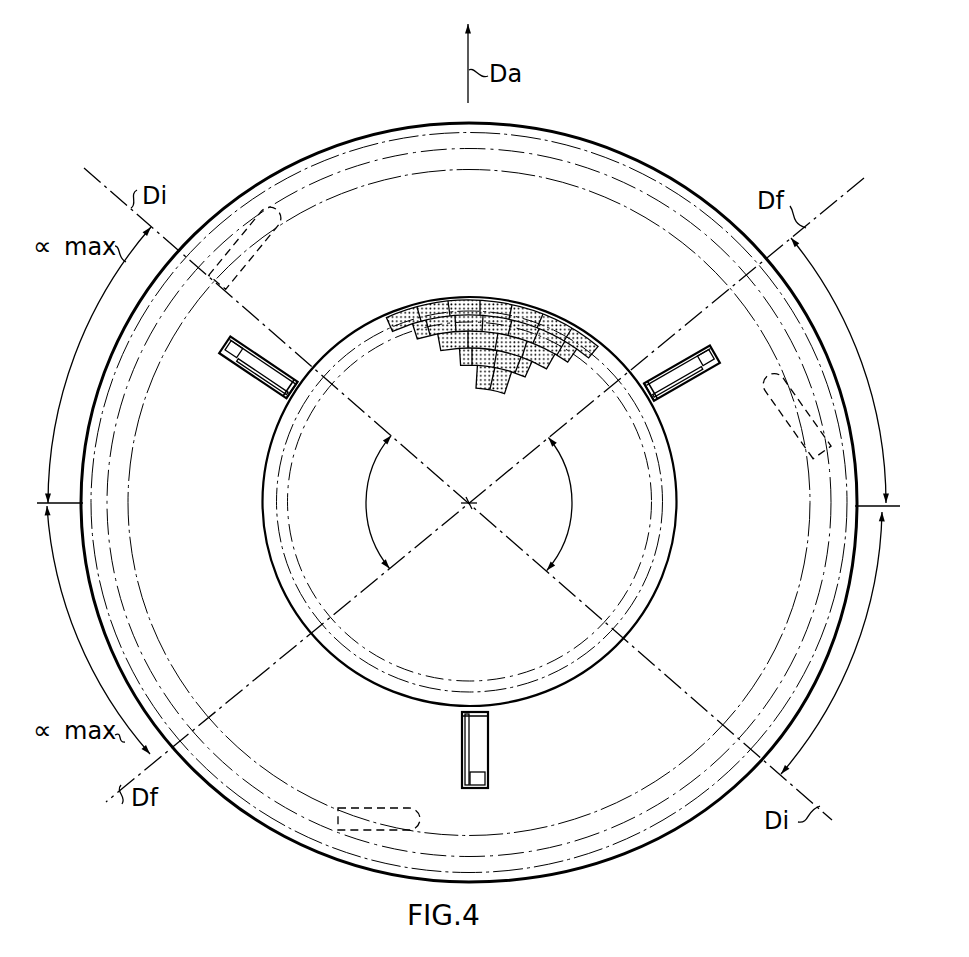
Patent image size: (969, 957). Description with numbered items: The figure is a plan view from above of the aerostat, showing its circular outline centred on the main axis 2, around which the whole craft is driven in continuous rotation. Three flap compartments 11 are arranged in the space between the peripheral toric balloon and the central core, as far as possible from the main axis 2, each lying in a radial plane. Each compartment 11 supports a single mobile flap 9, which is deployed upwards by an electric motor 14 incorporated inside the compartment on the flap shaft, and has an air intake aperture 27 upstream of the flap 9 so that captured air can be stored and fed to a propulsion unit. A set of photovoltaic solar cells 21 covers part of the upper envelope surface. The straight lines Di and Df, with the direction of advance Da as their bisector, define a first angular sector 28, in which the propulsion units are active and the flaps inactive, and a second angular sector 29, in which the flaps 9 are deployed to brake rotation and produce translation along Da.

The main axis 2 is at (469, 500).
The mobile flap 9 is at (265, 362).
The compartment 11 is at (257, 386).
The electric motor 14 is at (223, 352).
The photovoltaic solar cells 21 is at (490, 300).
The air intake aperture 27 is at (290, 398).
The first angular sector 28 is at (573, 505).
The second angular sector 29 is at (366, 504).